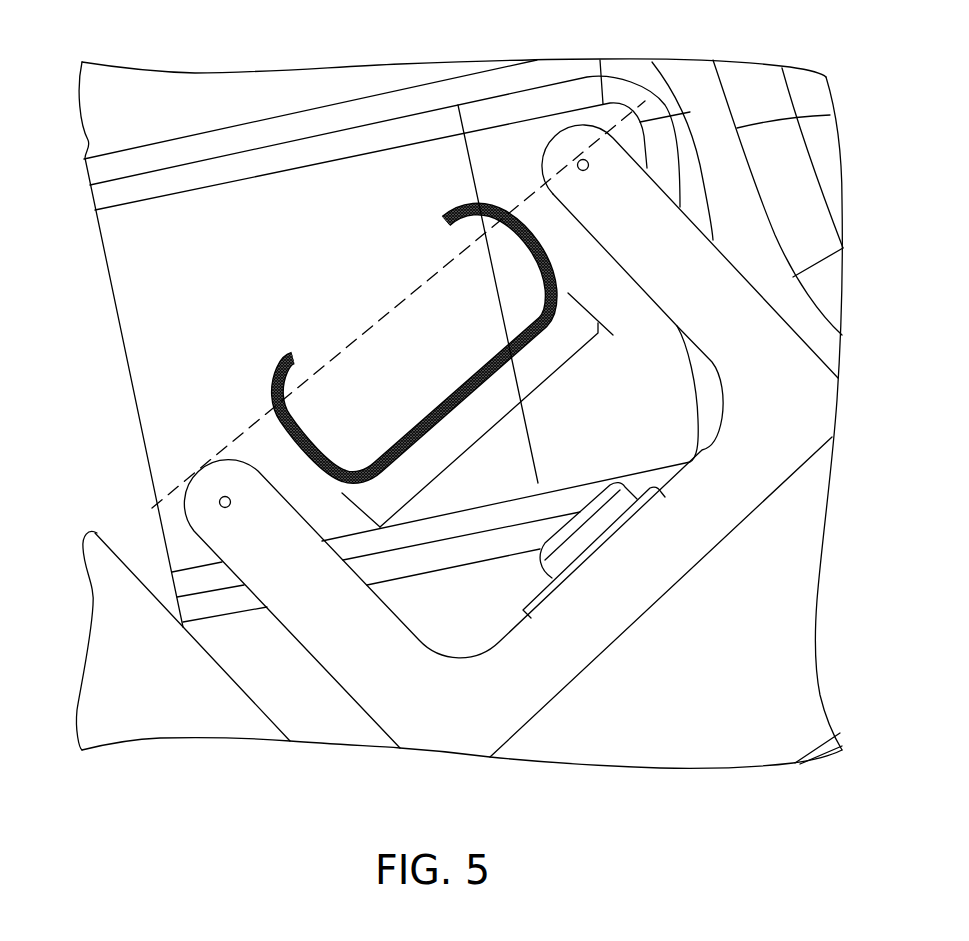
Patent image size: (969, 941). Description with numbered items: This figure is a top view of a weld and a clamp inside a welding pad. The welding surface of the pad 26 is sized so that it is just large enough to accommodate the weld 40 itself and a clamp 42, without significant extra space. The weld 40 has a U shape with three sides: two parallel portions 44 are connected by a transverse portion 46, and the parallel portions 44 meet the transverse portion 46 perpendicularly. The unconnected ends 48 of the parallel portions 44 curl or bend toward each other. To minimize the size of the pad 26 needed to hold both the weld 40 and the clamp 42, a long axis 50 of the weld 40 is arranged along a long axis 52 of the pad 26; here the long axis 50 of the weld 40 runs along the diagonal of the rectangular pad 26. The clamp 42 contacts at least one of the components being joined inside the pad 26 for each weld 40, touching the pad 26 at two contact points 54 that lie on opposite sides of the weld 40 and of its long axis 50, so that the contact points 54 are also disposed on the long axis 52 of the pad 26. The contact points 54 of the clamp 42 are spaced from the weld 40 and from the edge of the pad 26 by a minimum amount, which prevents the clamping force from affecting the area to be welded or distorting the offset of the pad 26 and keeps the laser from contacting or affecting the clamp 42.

The pad 26 is at (270, 233).
The weld 40 is at (288, 352).
The clamp 42 is at (613, 157).
The parallel portions 44 is at (720, 268).
The transverse portion 46 is at (733, 507).
The unconnected ends 48 is at (447, 212).
The long axis of the weld 50 is at (503, 420).
The long axis of the pad 52 is at (267, 413).
The contact points 54 is at (583, 158).